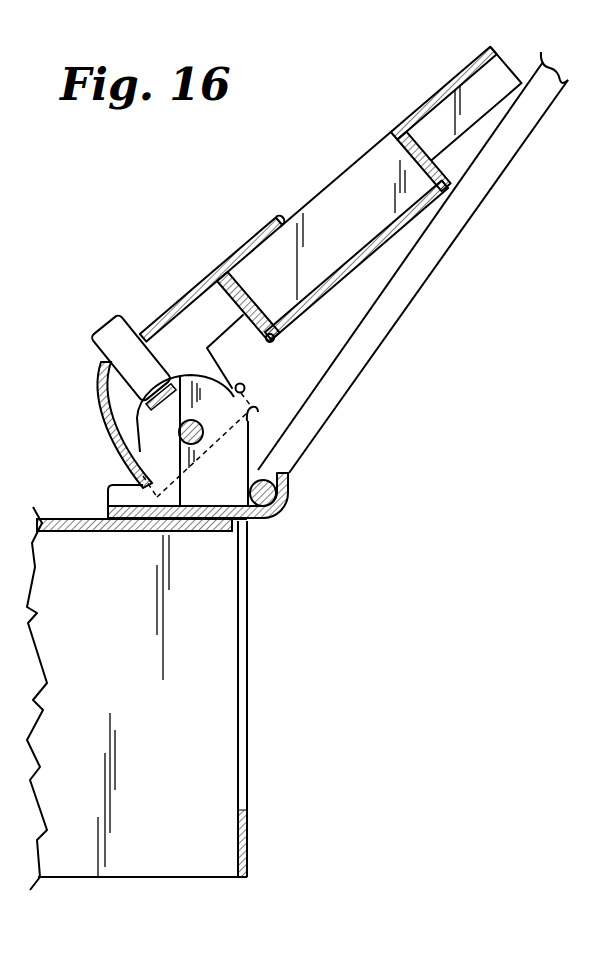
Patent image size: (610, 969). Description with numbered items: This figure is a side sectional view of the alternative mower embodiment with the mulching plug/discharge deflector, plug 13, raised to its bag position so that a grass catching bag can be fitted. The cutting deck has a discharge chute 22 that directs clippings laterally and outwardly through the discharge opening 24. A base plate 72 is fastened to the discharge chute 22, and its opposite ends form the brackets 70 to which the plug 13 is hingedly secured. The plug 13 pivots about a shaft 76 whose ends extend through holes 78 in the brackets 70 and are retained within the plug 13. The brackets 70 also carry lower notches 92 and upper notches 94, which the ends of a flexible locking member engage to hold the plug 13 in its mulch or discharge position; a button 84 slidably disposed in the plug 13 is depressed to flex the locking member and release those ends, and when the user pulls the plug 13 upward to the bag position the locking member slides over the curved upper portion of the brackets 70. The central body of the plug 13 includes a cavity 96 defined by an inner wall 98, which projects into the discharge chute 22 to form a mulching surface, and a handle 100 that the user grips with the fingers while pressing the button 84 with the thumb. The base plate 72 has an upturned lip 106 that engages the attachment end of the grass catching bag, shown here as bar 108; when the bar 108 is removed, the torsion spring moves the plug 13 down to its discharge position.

The plug 13 is at (219, 264).
The discharge chute 22 is at (42, 519).
The discharge opening 24 is at (240, 790).
The brackets 70 is at (105, 438).
The base plate 72 is at (107, 507).
The shaft 76 is at (180, 427).
The holes 78 is at (146, 453).
The button 84 is at (105, 326).
The lower notches 92 is at (258, 416).
The upper notches 94 is at (244, 388).
The cavity 96 is at (351, 241).
The inner wall 98 is at (346, 277).
The handle 100 is at (277, 220).
The upturned lip 106 is at (283, 514).
The bar 108 is at (368, 360).